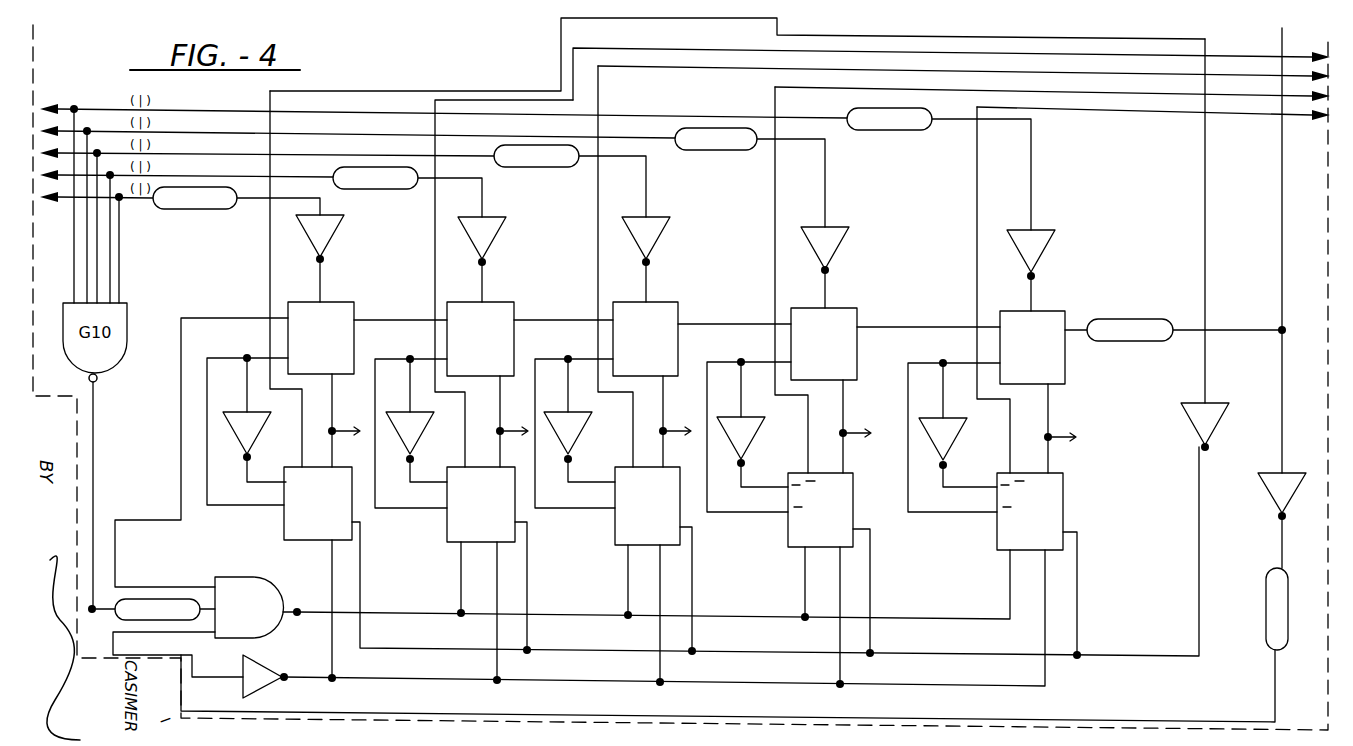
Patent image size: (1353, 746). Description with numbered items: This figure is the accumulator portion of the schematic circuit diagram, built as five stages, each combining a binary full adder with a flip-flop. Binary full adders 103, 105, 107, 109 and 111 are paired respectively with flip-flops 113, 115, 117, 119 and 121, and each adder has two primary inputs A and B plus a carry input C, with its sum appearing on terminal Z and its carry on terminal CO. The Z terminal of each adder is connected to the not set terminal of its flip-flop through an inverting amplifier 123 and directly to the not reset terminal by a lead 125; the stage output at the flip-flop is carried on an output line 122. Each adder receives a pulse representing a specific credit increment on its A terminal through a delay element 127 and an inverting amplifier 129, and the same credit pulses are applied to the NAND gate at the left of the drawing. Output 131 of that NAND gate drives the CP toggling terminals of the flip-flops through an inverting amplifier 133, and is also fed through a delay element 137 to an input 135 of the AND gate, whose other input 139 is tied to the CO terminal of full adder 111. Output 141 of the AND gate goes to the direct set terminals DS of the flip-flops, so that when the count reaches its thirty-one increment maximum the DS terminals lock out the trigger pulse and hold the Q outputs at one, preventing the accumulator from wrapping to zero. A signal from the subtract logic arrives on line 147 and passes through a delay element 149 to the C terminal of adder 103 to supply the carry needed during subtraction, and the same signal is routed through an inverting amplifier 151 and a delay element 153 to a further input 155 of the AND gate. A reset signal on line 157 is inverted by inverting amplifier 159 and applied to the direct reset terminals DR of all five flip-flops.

The binary full adder 103 is at (1052, 304).
The binary full adder 105 is at (846, 304).
The binary full adder 107 is at (668, 300).
The binary full adder 109 is at (502, 300).
The binary full adder 111 is at (342, 296).
The flip-flop 113 is at (990, 542).
The flip-flop 115 is at (780, 542).
The flip-flop 117 is at (606, 536).
The flip-flop 119 is at (440, 536).
The flip-flop 121 is at (272, 528).
The stage output line 122 is at (340, 428).
The inverting amplifier 123 is at (230, 428).
The lead 125 is at (206, 505).
The delay element 127 is at (193, 209).
The inverting amplifier 129 is at (336, 238).
The output of NAND gate G10 131 is at (97, 382).
The inverting amplifier 133 is at (255, 656).
The input of AND gate G11 135 is at (200, 588).
The delay element 137 is at (115, 617).
The input of AND gate G11 139 is at (215, 582).
The output of AND gate G11 141 is at (282, 618).
The line 147 is at (1284, 225).
The delay element 149 is at (1144, 341).
The inverting amplifier 151 is at (1292, 495).
The delay element 153 is at (1288, 628).
The input of gate G11 155 is at (210, 640).
The line 157 is at (1203, 165).
The inverting amplifier 159 is at (1195, 434).